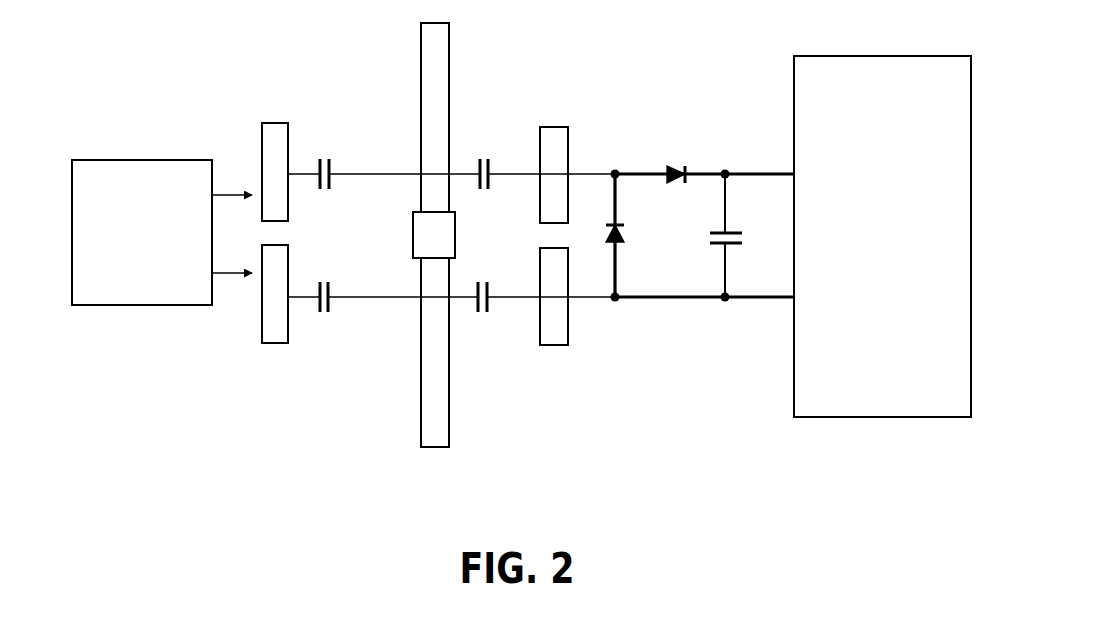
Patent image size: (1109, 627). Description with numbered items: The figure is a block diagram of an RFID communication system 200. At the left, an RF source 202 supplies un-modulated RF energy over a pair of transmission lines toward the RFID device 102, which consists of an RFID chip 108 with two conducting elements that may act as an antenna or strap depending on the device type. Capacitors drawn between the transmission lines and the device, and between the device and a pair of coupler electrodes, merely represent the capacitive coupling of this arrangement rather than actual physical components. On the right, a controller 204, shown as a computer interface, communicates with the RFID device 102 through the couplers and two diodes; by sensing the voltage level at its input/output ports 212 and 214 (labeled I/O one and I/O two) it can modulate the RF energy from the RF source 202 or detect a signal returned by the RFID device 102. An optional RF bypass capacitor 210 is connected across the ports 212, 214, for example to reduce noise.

The system 200 is at (890, 450).
The RF source 202 is at (139, 160).
The controller 204 is at (856, 212).
The RFID device 102 is at (434, 230).
The RFID chip 108 is at (455, 228).
The capacitor 210 is at (733, 236).
The input/output port 212 is at (793, 172).
The input/output port 214 is at (793, 300).